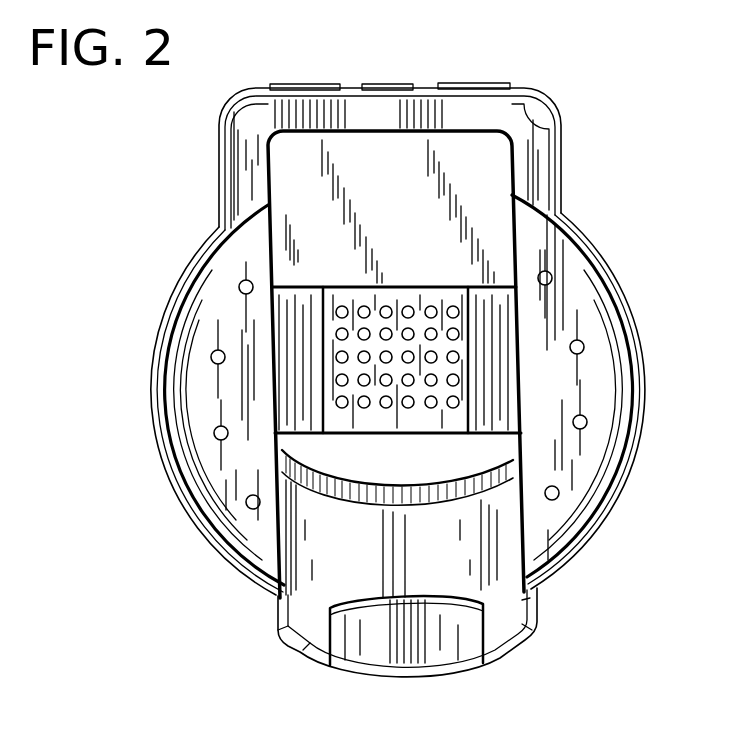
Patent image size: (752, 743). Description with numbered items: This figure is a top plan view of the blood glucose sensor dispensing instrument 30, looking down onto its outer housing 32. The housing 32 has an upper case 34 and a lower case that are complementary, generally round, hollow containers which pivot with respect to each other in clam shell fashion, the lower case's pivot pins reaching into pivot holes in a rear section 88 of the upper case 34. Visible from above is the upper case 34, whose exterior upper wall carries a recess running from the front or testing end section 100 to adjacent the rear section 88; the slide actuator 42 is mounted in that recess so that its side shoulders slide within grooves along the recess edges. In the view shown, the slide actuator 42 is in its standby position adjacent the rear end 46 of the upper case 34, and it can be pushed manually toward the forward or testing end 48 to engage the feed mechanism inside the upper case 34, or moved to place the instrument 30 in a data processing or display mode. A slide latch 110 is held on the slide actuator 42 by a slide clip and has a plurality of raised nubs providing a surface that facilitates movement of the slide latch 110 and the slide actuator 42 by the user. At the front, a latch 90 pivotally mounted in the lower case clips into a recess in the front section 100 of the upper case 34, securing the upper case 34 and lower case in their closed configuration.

The sensor dispensing instrument 30 is at (684, 237).
The outer housing 32 is at (141, 354).
The upper case 34 is at (617, 397).
The slide actuator 42 is at (507, 445).
The rear end 46 is at (528, 88).
The forward or testing end 48 is at (537, 640).
The rear section 88 is at (538, 135).
The latch 90 is at (452, 617).
The front or testing end section 100 is at (308, 662).
The slide latch 110 is at (452, 306).